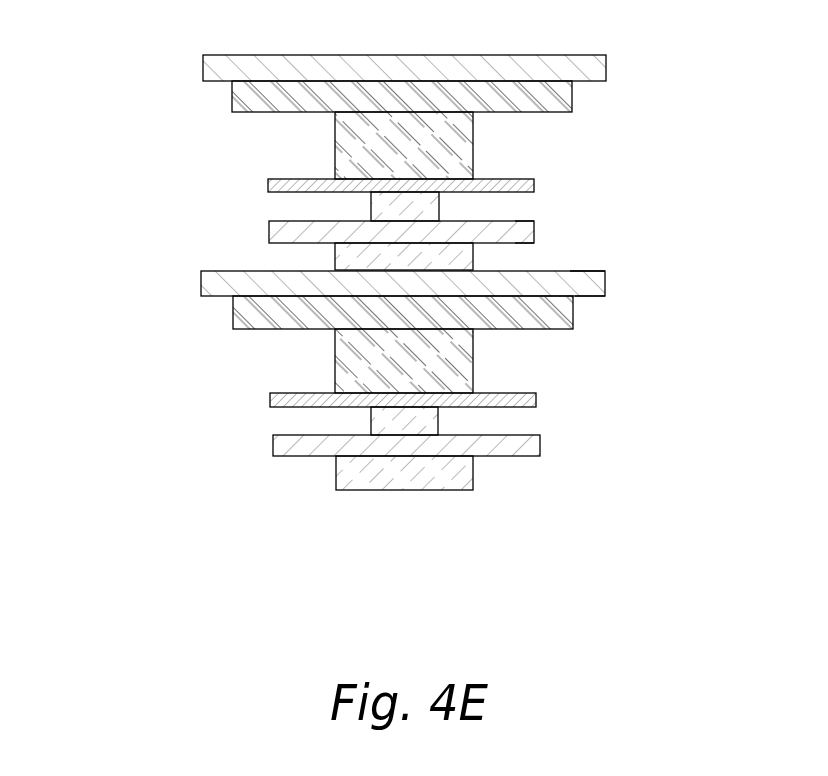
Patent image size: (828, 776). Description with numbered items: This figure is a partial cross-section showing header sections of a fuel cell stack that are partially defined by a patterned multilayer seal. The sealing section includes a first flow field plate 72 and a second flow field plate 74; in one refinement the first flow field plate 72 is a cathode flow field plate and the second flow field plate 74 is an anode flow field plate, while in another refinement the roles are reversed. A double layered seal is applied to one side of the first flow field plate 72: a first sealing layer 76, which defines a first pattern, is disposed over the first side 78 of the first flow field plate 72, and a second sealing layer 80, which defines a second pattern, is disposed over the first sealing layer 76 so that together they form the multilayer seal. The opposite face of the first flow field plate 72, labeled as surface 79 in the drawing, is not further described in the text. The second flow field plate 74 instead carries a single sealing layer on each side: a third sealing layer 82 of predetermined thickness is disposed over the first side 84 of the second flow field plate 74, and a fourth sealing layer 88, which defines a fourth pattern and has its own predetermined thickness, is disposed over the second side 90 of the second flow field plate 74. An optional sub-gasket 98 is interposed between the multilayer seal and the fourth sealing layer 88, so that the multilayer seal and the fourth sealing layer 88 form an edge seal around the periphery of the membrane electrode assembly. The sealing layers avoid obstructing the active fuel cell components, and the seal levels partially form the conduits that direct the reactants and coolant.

The first flow field plate 72 is at (233, 65).
The second flow field plate 74 is at (317, 230).
The first sealing layer 76 is at (394, 105).
The first side of first flow field plate 78 is at (587, 296).
The upper surface of first plate 79 is at (583, 271).
The second sealing layer 80 is at (397, 155).
The third sealing layer 82 is at (394, 270).
The first side of second flow field plate 84 is at (522, 238).
The fourth sealing layer 88 is at (394, 217).
The second side of second flow field plate 90 is at (527, 222).
The sub-gasket 98 is at (290, 184).